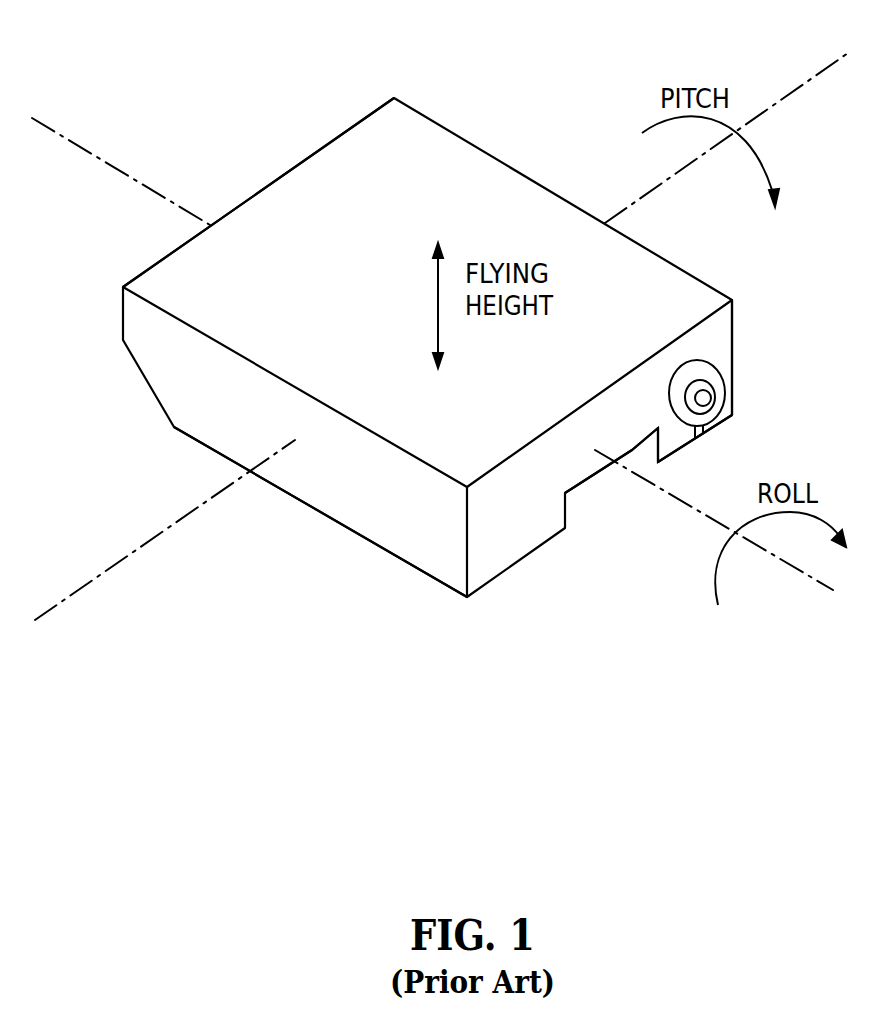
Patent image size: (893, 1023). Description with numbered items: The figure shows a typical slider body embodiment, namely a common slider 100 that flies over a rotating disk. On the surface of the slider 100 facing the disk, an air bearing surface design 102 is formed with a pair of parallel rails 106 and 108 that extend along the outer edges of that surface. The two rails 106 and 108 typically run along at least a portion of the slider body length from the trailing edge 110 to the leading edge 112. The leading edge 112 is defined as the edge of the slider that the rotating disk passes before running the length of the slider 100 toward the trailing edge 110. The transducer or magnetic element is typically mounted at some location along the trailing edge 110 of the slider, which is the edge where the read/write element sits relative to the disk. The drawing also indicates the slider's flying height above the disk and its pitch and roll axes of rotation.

The slider 100 is at (477, 88).
The air bearing surface design 102 is at (686, 445).
The rail 106 is at (390, 552).
The rail 108 is at (729, 415).
The trailing edge 110 is at (723, 377).
The leading edge 112 is at (279, 177).